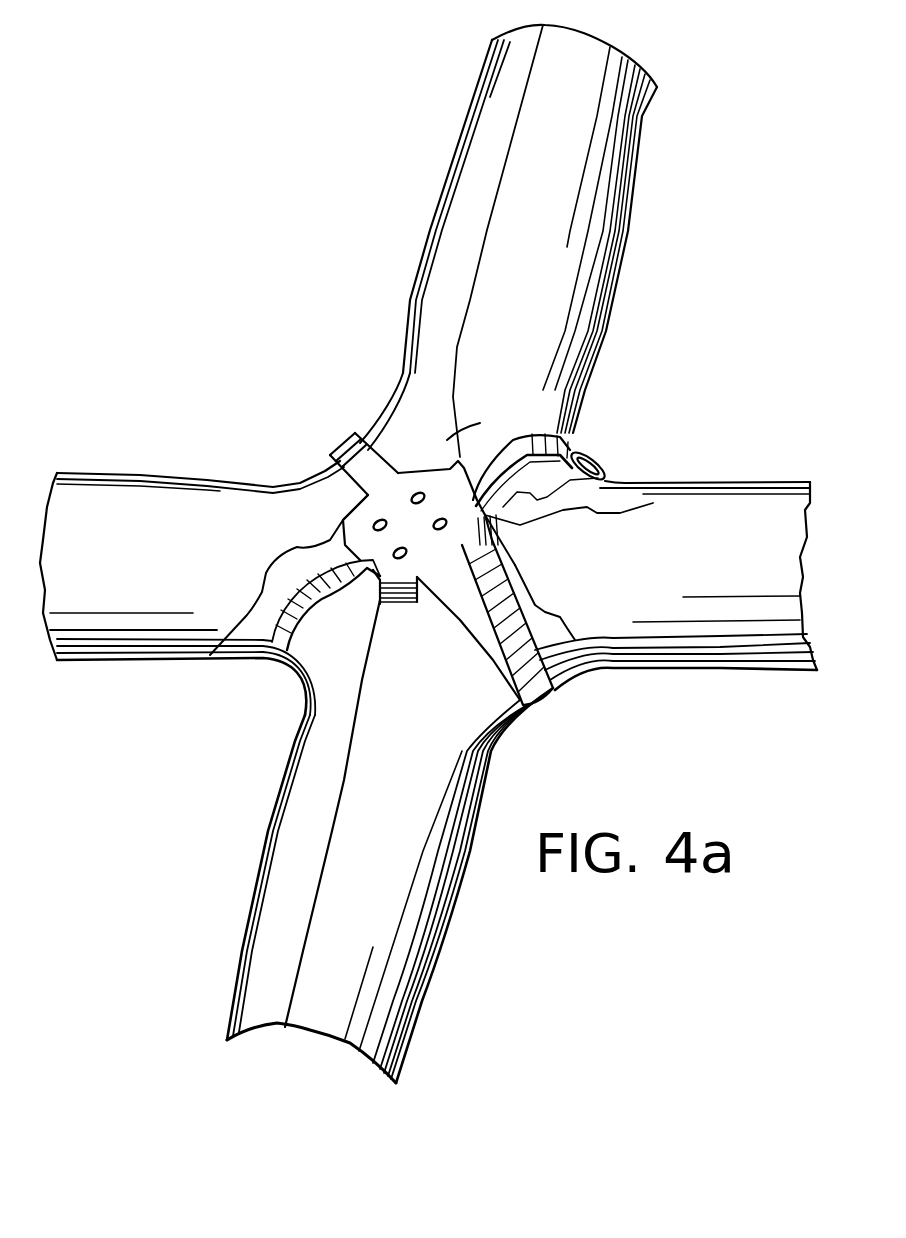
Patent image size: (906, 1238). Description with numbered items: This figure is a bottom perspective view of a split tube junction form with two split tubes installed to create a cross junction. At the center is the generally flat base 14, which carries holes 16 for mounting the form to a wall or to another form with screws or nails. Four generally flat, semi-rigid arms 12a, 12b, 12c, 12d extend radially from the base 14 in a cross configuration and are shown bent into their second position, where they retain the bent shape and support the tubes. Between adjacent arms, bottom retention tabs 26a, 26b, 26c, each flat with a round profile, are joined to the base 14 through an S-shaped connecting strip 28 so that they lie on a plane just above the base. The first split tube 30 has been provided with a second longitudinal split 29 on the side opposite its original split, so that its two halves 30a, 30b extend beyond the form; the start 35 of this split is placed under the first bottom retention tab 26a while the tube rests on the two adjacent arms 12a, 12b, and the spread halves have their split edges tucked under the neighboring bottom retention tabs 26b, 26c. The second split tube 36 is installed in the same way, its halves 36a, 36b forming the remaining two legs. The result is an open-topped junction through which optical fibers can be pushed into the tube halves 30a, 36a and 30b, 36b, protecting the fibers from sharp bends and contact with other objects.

The arm 12a is at (603, 474).
The arm 12b is at (527, 700).
The arm 12c is at (338, 447).
The arm 12d is at (283, 680).
The base 14 is at (458, 470).
The holes 16 is at (412, 494).
The bottom retention tab 26a is at (520, 543).
The bottom retention tab 26b is at (270, 547).
The bottom retention tab 26c is at (440, 447).
The S-shaped connecting strip 28 is at (565, 450).
The second longitudinal split 29 is at (497, 200).
The first split tube 30 is at (772, 655).
The half of first split tube 30a is at (610, 112).
The half of first split tube 30b is at (402, 988).
The start of the second longitudinal split 35 is at (273, 540).
The second split tube 36 is at (90, 637).
The half of second split tube 36a is at (483, 88).
The half of second split tube 36b is at (263, 933).